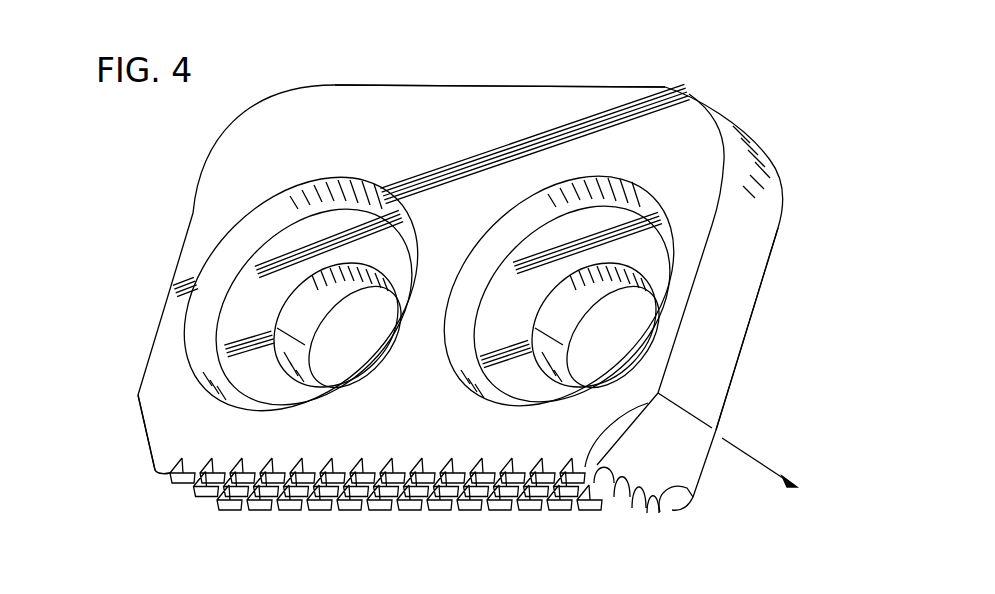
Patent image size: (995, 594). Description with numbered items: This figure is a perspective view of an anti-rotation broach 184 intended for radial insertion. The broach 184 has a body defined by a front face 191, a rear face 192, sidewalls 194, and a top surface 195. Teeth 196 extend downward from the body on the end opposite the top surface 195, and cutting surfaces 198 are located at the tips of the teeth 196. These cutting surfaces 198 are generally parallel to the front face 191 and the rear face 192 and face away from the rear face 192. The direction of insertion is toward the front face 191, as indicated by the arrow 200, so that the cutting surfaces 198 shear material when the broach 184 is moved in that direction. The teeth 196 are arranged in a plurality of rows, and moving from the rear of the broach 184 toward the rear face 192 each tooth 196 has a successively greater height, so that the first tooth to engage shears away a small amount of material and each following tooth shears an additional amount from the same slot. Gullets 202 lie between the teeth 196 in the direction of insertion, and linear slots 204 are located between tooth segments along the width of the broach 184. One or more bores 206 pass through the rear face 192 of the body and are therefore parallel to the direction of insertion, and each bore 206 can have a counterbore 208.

The broach 184 is at (188, 203).
The front face 191 is at (742, 348).
The rear face 192 is at (190, 424).
The sidewalls 194 is at (718, 297).
The top surface 195 is at (585, 85).
The teeth 196 is at (643, 408).
The cutting surfaces 198 is at (667, 512).
The arrow 200 is at (762, 462).
The gullets 202 is at (688, 489).
The linear slots 204 is at (155, 465).
The bores 206 is at (301, 341).
The counterbore 208 is at (265, 230).